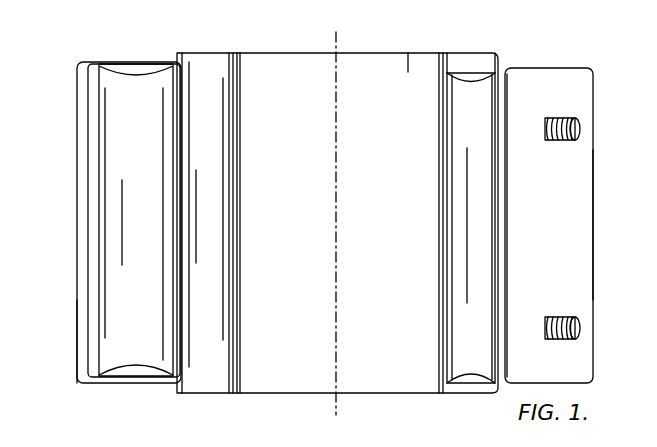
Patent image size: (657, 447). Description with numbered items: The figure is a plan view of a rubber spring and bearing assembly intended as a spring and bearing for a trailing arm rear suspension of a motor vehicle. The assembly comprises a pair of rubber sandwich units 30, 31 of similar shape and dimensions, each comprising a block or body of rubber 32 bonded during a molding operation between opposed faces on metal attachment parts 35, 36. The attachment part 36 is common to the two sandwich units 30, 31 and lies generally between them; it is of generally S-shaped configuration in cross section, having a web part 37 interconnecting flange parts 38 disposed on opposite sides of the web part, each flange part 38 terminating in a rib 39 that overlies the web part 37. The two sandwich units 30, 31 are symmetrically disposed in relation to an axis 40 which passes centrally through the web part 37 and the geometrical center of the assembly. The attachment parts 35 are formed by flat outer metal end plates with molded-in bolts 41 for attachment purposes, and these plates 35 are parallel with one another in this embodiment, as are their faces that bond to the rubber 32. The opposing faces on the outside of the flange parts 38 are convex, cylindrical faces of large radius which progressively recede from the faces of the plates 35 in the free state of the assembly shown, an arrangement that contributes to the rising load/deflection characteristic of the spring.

The rubber sandwich unit 30 is at (117, 148).
The rubber sandwich unit 31 is at (556, 180).
The block or body of rubber 32 is at (113, 222).
The attachment part 35 is at (80, 330).
The attachment part 36 is at (305, 86).
The web part 37 is at (408, 60).
The flange part 38 is at (478, 62).
The rib 39 is at (207, 70).
The axis 40 is at (336, 398).
The molded-in bolt 41 is at (580, 128).